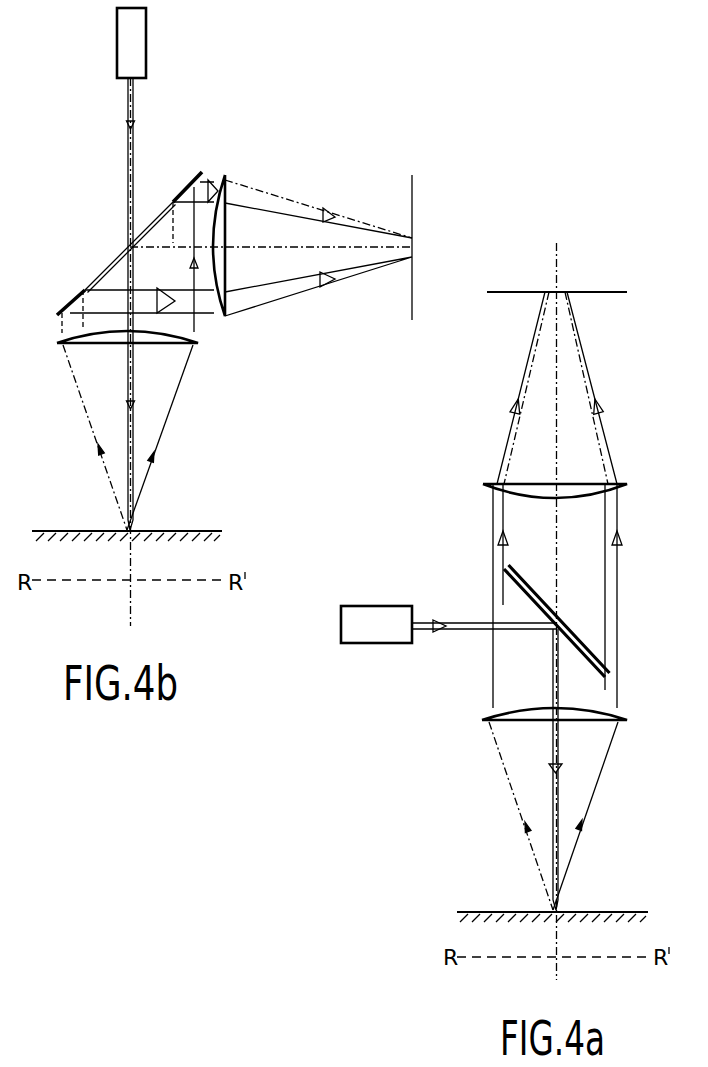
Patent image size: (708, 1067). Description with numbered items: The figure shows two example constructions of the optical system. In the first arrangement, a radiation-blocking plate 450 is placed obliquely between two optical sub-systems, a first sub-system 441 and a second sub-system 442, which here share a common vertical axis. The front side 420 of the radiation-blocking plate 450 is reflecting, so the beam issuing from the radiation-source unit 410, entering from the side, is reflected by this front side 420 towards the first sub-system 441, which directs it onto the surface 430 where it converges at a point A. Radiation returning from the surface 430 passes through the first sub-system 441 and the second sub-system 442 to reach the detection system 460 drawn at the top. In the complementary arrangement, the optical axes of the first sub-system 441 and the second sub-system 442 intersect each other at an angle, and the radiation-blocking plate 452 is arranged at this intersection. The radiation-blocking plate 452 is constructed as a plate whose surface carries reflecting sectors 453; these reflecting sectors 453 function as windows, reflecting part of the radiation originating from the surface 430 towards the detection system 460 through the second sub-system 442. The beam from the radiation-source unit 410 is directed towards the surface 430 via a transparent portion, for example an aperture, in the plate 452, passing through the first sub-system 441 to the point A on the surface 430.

In FIG. 4b, the radiation-source unit 410 is at (147, 40).
In FIG. 4a, the radiation-source unit 410 is at (391, 635).
In FIG. 4a, the front side of the radiation-blocking plate 420 is at (598, 680).
In FIG. 4b, the surface 430 is at (210, 530).
In FIG. 4a, the surface 430 is at (617, 912).
In FIG. 4b, the first sub-system 441 is at (175, 345).
In FIG. 4a, the first sub-system 441 is at (590, 718).
In FIG. 4b, the second sub-system 442 is at (220, 220).
In FIG. 4a, the second sub-system 442 is at (580, 492).
In FIG. 4a, the radiation-blocking plate 450 is at (588, 648).
In FIG. 4b, the radiation-blocking plate 452 is at (188, 195).
In FIG. 4b, the reflecting sectors 453 is at (198, 192).
In FIG. 4b, the detection system 460 is at (412, 305).
In FIG. 4a, the detection system 460 is at (618, 293).
In FIG. 4b, the focal point on surface A is at (130, 528).
In FIG. 4a, the focal point on surface A is at (557, 908).